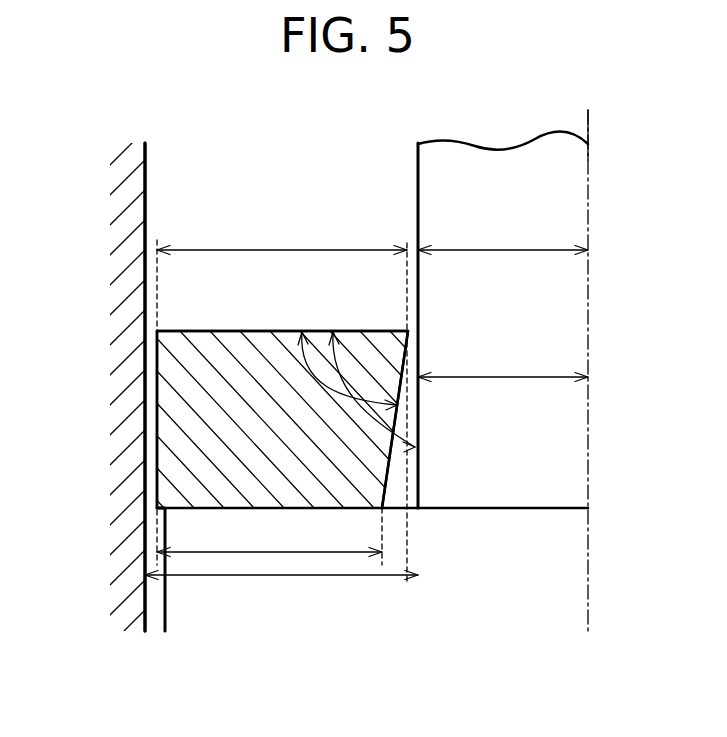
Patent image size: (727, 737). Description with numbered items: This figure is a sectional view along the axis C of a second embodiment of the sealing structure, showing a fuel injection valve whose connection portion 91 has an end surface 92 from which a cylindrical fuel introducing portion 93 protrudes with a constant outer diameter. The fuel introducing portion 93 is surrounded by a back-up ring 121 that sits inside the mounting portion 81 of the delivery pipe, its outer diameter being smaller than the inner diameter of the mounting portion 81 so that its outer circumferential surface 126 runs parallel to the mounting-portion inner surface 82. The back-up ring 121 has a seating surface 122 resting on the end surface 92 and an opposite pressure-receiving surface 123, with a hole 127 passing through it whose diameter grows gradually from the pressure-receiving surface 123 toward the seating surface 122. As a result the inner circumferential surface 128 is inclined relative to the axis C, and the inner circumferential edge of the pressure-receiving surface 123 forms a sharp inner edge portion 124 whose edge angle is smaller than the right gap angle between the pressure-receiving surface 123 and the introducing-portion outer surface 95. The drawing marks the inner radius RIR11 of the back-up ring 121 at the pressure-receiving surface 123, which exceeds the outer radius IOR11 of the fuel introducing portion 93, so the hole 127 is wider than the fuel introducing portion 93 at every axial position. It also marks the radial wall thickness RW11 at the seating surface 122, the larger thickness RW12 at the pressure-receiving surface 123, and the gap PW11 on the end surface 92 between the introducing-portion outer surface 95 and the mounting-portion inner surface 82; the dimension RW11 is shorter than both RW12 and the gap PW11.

The mounting portion 81 is at (145, 158).
The mounting-portion inner surface 82 is at (150, 178).
The connection portion 91 is at (572, 551).
The end surface 92 is at (185, 486).
The fuel introducing portion 93 is at (573, 213).
The introducing-portion outer surface 95 is at (417, 203).
The back-up ring 121 is at (198, 420).
The seating surface 122 is at (168, 511).
The pressure-receiving surface 123 is at (249, 330).
The inner edge portion 124 is at (388, 347).
The outer circumferential surface 126 is at (157, 388).
The hole 127 is at (420, 357).
The inner circumferential surface 128 is at (388, 485).
The axis C is at (590, 116).
The dimension RW12 is at (284, 248).
The inner radius RIR11 is at (497, 249).
The outer radius IOR11 is at (528, 377).
The dimension RW11 is at (256, 554).
The gap PW11 is at (330, 578).